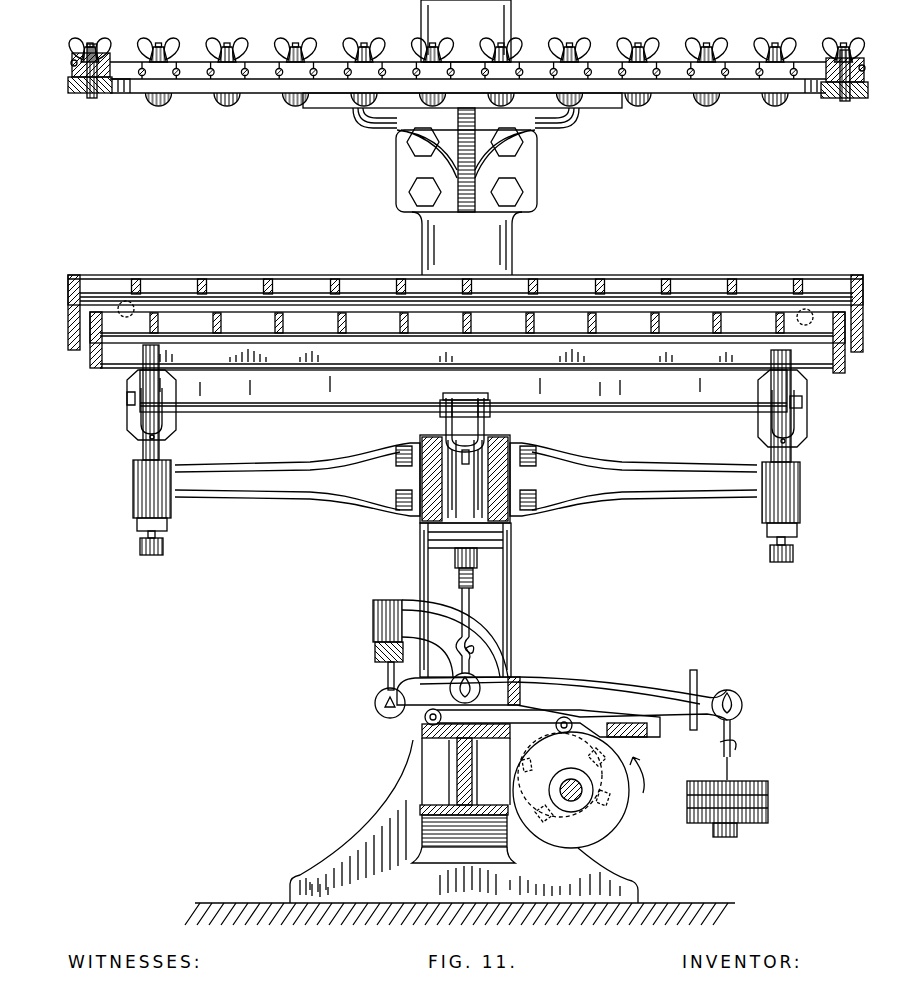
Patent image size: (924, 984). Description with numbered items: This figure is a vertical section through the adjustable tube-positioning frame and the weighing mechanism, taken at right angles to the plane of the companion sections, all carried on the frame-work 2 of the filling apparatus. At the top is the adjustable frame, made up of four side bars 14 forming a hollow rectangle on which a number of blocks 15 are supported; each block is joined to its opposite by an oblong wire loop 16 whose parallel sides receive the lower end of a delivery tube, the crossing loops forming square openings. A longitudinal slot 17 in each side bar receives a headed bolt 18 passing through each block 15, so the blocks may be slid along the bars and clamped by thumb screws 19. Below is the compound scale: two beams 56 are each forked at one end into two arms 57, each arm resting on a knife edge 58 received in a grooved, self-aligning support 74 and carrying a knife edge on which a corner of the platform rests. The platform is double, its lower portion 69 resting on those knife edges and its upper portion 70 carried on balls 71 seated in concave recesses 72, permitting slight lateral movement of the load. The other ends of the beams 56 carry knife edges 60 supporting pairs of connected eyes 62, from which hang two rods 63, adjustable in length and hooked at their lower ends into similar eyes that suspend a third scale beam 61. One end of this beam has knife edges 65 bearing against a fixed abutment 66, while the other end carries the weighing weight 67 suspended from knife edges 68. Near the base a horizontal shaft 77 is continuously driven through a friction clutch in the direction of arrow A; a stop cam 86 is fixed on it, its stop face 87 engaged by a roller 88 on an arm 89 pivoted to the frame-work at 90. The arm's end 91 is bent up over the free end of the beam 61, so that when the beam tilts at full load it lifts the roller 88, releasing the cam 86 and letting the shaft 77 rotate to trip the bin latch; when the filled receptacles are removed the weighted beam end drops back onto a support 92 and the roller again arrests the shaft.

The frame-work 2 is at (500, 247).
The side bars 14 is at (70, 92).
The blocks 15 is at (112, 56).
The oblong wire loop 16 is at (257, 60).
The longitudinal slot 17 is at (107, 93).
The headed bolt 18 is at (88, 97).
The thumb screws 19 is at (73, 42).
The scale beams 56 is at (460, 410).
The arms 57 is at (656, 408).
The knife edge 58 is at (802, 402).
The knife edges 60 is at (503, 417).
The third scale beam 61 is at (562, 683).
The connected eyes 62 is at (483, 394).
The rods 63 is at (467, 603).
The knife edges 65 is at (383, 708).
The fixed abutment 66 is at (387, 675).
The weighing weight 67 is at (687, 812).
The knife edges 68 is at (745, 705).
The lower portion of the platform 69 is at (288, 340).
The upper portion of the platform 70 is at (238, 278).
The balls 71 is at (140, 300).
The concave recesses 72 is at (120, 306).
The grooved supports 74 is at (802, 432).
The horizontal shaft 77 is at (576, 800).
The stop cam 86 is at (612, 822).
The stop face 87 is at (580, 738).
The roller 88 is at (567, 722).
The arm 89 is at (495, 740).
The pivot 90 is at (428, 718).
The end of arm 91 is at (697, 680).
The support 92 is at (668, 720).
The arrow A is at (648, 775).